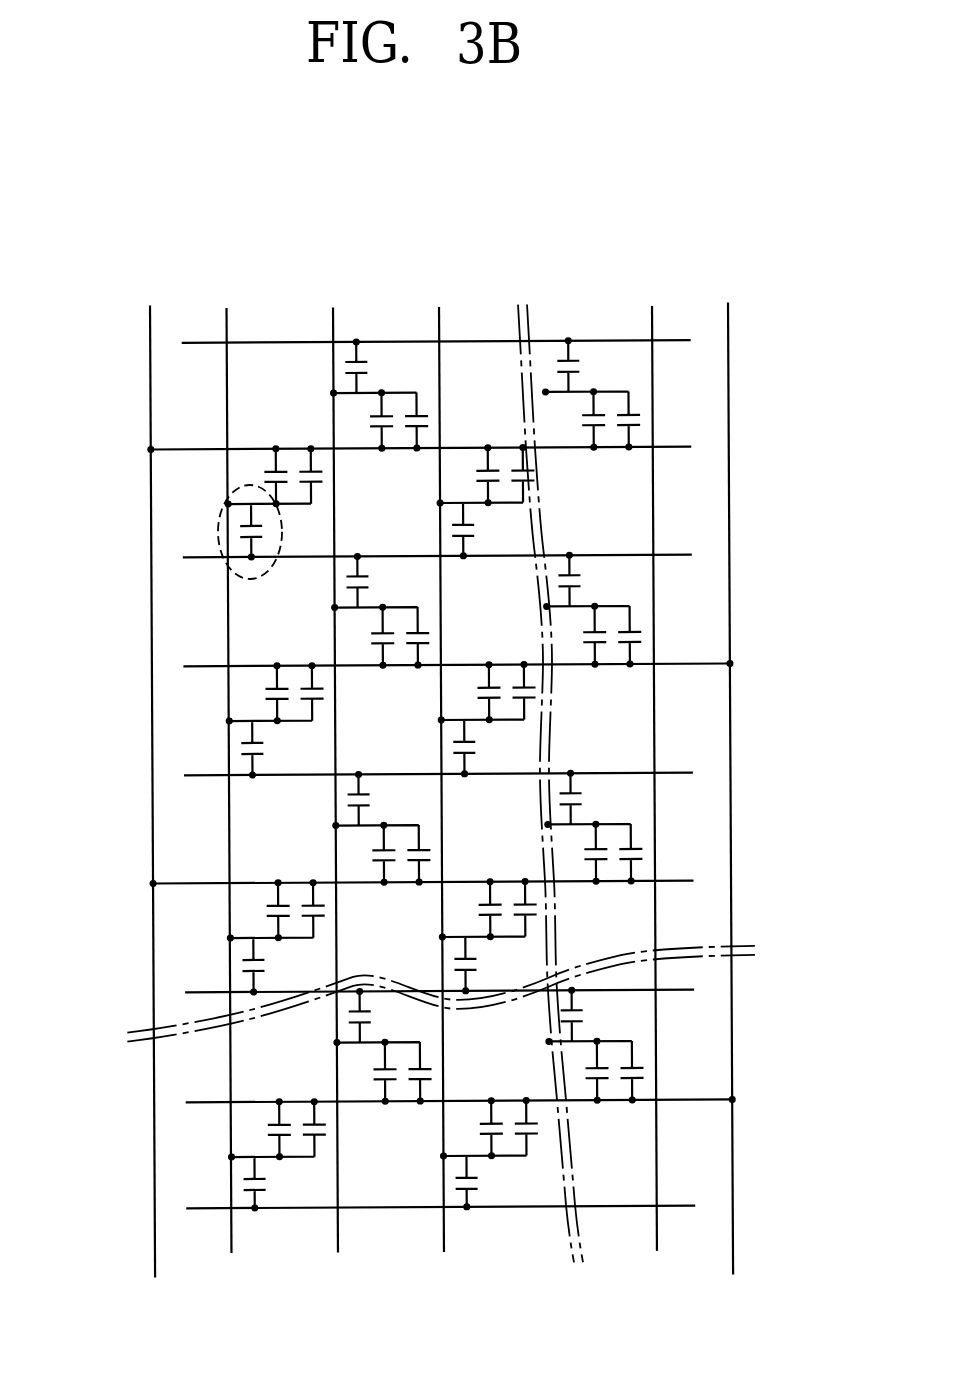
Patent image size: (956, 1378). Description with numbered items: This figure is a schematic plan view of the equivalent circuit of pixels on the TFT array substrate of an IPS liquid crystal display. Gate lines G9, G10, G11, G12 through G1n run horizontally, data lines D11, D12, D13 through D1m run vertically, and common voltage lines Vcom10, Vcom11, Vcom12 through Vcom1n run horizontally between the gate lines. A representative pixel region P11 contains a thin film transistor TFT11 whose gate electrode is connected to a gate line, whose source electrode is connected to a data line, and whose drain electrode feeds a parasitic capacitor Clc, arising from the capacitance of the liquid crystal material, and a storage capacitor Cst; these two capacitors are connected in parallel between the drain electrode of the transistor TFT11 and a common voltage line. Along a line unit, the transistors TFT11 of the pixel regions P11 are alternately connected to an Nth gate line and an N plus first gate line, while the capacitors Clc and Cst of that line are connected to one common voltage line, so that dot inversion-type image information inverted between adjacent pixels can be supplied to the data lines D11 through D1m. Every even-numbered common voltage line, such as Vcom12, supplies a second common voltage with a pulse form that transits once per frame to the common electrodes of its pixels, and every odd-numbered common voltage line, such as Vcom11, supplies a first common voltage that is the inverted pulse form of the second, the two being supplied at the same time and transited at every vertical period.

The pixel region P11 is at (187, 406).
The TFT TFT11 is at (218, 529).
The parasitic capacitor Clc is at (364, 421).
The storage capacitor Cst is at (437, 420).
The data line D11 is at (228, 760).
The data line D12 is at (337, 759).
The data line D13 is at (437, 759).
The data line D1m is at (658, 759).
The gate line G9 is at (387, 347).
The gate line G10 is at (387, 557).
The gate line G11 is at (388, 774).
The gate line G12 is at (388, 992).
The gate line G1n is at (391, 1216).
The common voltage line Vcom10 is at (373, 435).
The common voltage line Vcom11 is at (507, 663).
The common voltage line Vcom12 is at (368, 882).
The common voltage line Vcom1n is at (511, 1099).